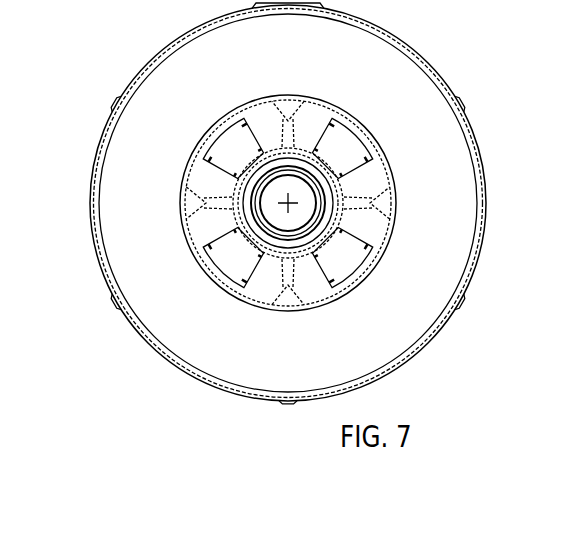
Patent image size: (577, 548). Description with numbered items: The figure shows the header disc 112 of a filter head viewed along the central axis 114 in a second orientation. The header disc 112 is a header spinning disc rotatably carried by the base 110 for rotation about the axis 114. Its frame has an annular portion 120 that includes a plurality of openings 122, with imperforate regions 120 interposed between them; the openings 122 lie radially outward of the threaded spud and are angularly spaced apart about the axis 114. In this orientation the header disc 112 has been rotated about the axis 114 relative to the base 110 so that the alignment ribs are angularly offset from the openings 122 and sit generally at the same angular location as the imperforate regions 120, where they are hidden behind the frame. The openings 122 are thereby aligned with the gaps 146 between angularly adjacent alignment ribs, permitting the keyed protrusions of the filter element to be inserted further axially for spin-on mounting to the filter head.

The base 110 is at (110, 147).
The header disc 112 is at (377, 202).
The axis 114 is at (295, 193).
The annular portion 120 is at (288, 123).
The openings 122 is at (242, 148).
The gaps 146 is at (220, 155).